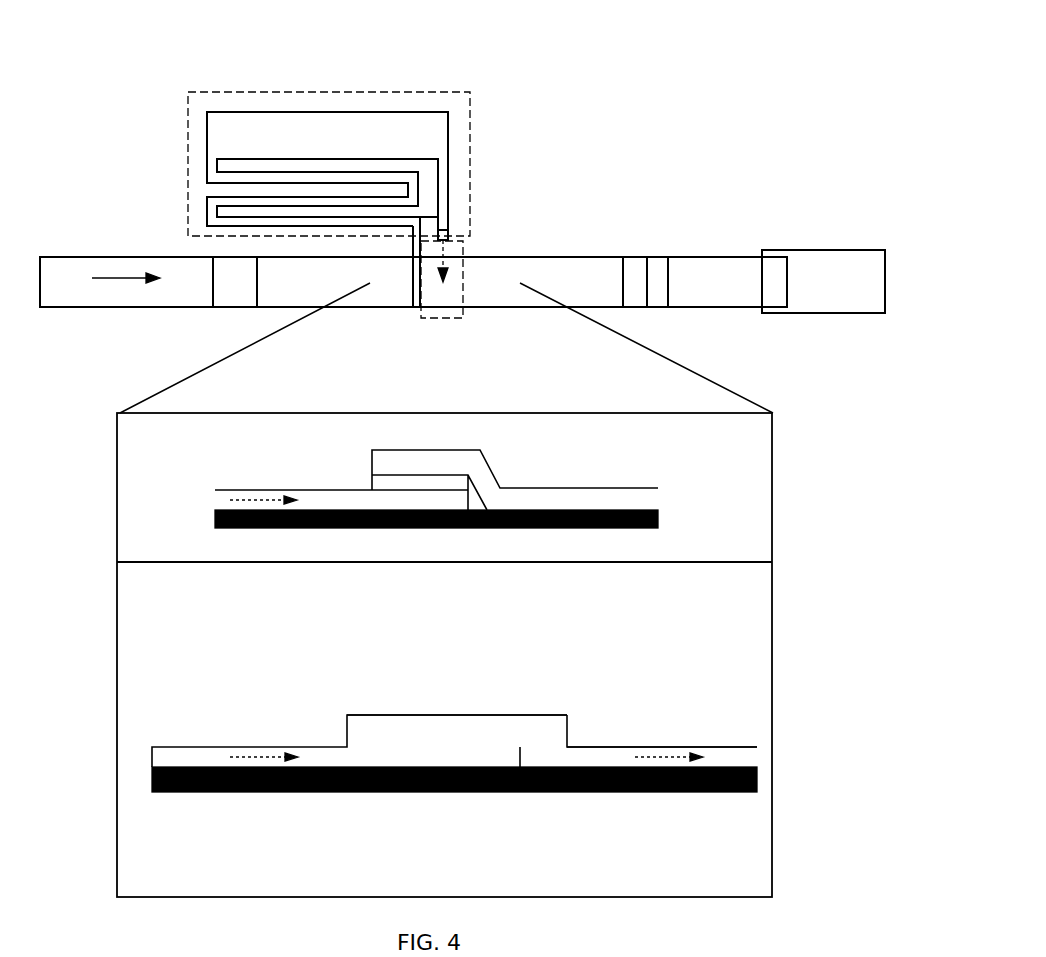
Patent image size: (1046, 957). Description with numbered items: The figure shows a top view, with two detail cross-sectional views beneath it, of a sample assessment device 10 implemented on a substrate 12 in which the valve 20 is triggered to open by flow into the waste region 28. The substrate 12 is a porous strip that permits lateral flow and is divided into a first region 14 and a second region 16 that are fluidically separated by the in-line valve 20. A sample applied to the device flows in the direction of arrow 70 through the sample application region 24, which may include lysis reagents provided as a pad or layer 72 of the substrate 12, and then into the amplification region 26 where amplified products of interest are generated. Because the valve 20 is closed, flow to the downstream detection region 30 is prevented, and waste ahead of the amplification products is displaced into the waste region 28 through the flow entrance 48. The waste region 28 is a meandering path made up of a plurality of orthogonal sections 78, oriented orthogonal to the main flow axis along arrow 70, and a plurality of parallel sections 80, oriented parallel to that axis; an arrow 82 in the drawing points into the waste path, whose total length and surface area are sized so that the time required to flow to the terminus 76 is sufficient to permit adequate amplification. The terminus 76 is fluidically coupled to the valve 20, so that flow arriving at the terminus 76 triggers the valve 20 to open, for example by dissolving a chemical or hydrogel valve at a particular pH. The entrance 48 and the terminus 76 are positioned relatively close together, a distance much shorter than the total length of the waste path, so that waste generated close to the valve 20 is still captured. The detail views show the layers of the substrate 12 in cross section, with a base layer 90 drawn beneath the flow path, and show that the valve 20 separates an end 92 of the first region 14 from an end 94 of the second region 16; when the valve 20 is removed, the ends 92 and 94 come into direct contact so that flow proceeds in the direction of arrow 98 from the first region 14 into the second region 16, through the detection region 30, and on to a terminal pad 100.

The sample assessment device 10 is at (581, 48).
The substrate 12 is at (62, 308).
The first region 14 is at (293, 346).
The second region 16 is at (577, 341).
The valve 20 is at (437, 320).
The sample application region 24 is at (135, 308).
The amplification region 26 is at (372, 308).
The waste region 28 is at (478, 156).
The detection region 30 is at (658, 308).
The flow entrance 48 is at (411, 262).
The arrow 70 is at (117, 276).
The pad or layer 72 is at (228, 308).
The terminus 76 is at (443, 215).
The orthogonal sections 78 is at (207, 212).
The parallel sections 80 is at (218, 197).
The inlet chamber 82 is at (257, 138).
The substrate base 90 is at (402, 755).
The end of the first region 92 is at (422, 503).
The end of the second region 94 is at (392, 462).
The arrow 98 is at (662, 762).
The terminal pad 100 is at (843, 315).